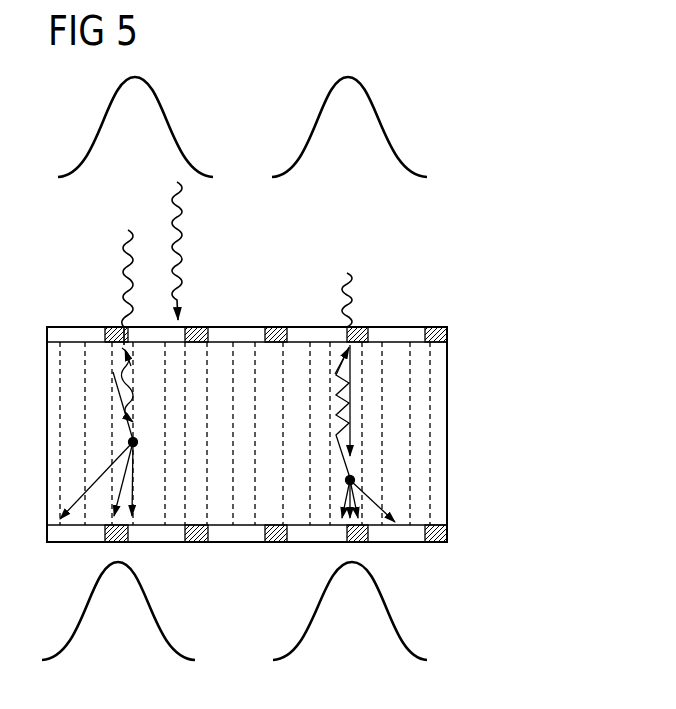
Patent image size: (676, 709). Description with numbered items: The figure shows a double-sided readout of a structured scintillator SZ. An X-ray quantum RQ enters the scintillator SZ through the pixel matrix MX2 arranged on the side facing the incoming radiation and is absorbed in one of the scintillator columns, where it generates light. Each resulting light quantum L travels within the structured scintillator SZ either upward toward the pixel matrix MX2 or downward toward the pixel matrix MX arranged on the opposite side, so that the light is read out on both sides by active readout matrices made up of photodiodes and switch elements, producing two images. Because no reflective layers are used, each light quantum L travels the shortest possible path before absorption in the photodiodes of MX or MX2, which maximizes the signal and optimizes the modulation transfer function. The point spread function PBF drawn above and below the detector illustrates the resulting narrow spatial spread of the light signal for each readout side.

The point spread function PBF is at (418, 118).
The X-ray quantum RQ is at (120, 250).
The pixel matrix MX2 is at (458, 329).
The scintillator SZ is at (446, 392).
The light quantum L is at (398, 442).
The pixel matrix MX is at (458, 527).